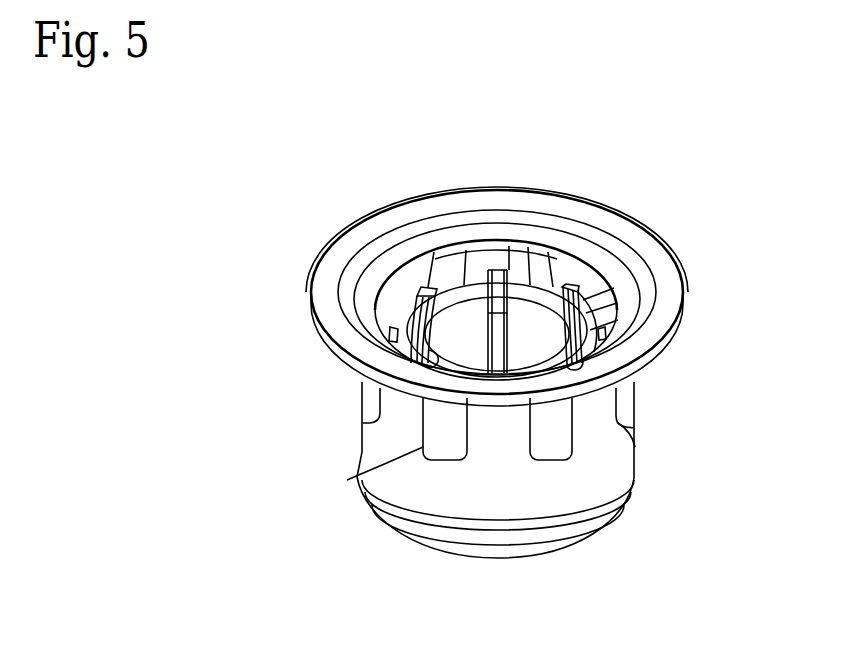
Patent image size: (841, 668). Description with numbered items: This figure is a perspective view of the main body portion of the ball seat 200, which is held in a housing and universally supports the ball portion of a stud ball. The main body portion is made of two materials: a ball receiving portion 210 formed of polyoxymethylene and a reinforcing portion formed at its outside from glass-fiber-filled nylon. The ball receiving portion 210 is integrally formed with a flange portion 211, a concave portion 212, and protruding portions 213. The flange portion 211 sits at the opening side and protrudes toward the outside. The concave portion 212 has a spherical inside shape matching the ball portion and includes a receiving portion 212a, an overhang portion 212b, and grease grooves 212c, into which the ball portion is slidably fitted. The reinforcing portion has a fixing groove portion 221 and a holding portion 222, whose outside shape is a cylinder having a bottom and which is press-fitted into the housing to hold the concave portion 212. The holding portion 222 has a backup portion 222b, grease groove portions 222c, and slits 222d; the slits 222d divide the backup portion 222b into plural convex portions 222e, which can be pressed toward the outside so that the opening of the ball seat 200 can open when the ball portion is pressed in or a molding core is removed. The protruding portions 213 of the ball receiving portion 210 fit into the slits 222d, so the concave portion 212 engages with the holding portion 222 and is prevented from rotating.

The ball seat 200 is at (652, 200).
The ball receiving portion 210 is at (672, 238).
The flange portion 211 is at (345, 290).
The concave portion 212 is at (435, 280).
The receiving portion 212a is at (615, 356).
The overhang portion 212b is at (620, 283).
The grease grooves 212c is at (492, 248).
The protruding portions 213 is at (366, 411).
The fixing groove portion 221 is at (458, 534).
The holding portion 222 is at (640, 431).
The backup portion 222b is at (477, 255).
The grease groove portions 222c is at (392, 282).
The slits 222d is at (371, 491).
The convex portions 222e is at (384, 413).